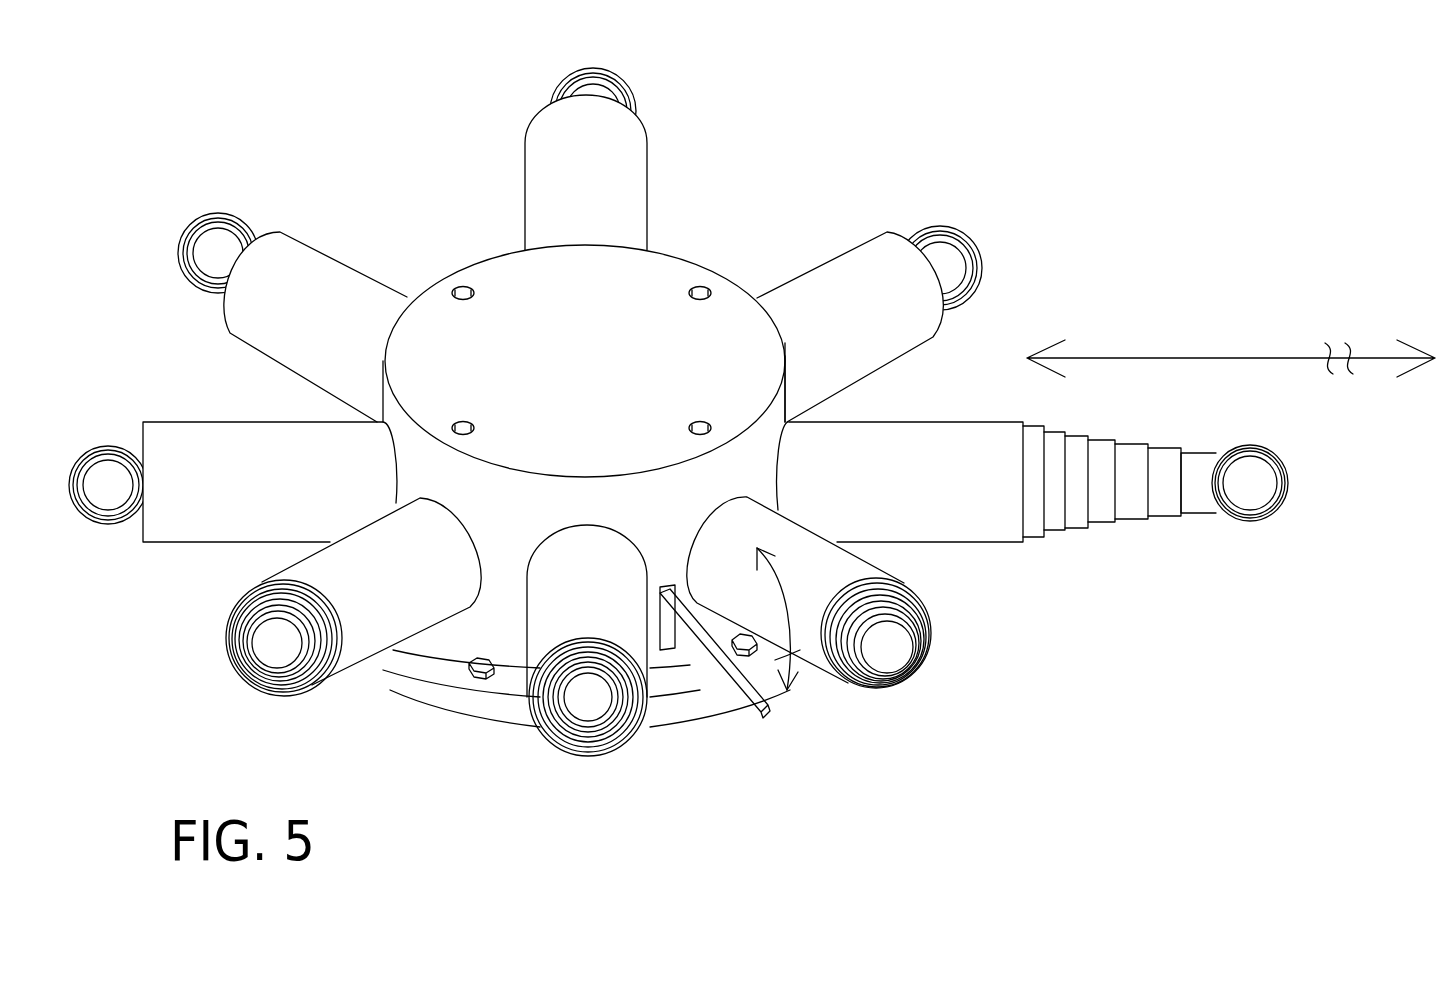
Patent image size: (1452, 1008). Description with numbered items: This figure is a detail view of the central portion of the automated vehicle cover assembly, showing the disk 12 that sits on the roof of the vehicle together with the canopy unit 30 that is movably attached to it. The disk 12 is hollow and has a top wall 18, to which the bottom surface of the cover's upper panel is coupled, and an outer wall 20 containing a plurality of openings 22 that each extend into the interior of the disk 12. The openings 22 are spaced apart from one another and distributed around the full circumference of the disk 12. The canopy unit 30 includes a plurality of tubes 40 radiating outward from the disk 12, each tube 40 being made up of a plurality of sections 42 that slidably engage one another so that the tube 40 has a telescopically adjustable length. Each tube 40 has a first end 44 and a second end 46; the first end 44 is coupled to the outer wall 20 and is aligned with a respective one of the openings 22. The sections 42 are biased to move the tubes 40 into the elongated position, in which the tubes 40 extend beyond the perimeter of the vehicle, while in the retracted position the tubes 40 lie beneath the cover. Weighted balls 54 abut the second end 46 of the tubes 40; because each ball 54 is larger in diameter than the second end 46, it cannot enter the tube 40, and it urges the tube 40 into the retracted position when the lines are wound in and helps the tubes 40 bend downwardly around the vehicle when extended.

The disk 12 is at (722, 273).
The top wall 18 is at (514, 295).
The outer wall 20 is at (496, 617).
The openings 22 is at (393, 448).
The canopy unit 30 is at (942, 192).
The tubes 40 is at (340, 263).
The sections 42 is at (1035, 538).
The first end 44 is at (782, 448).
The second end 46 is at (1218, 482).
The balls 54 is at (211, 226).